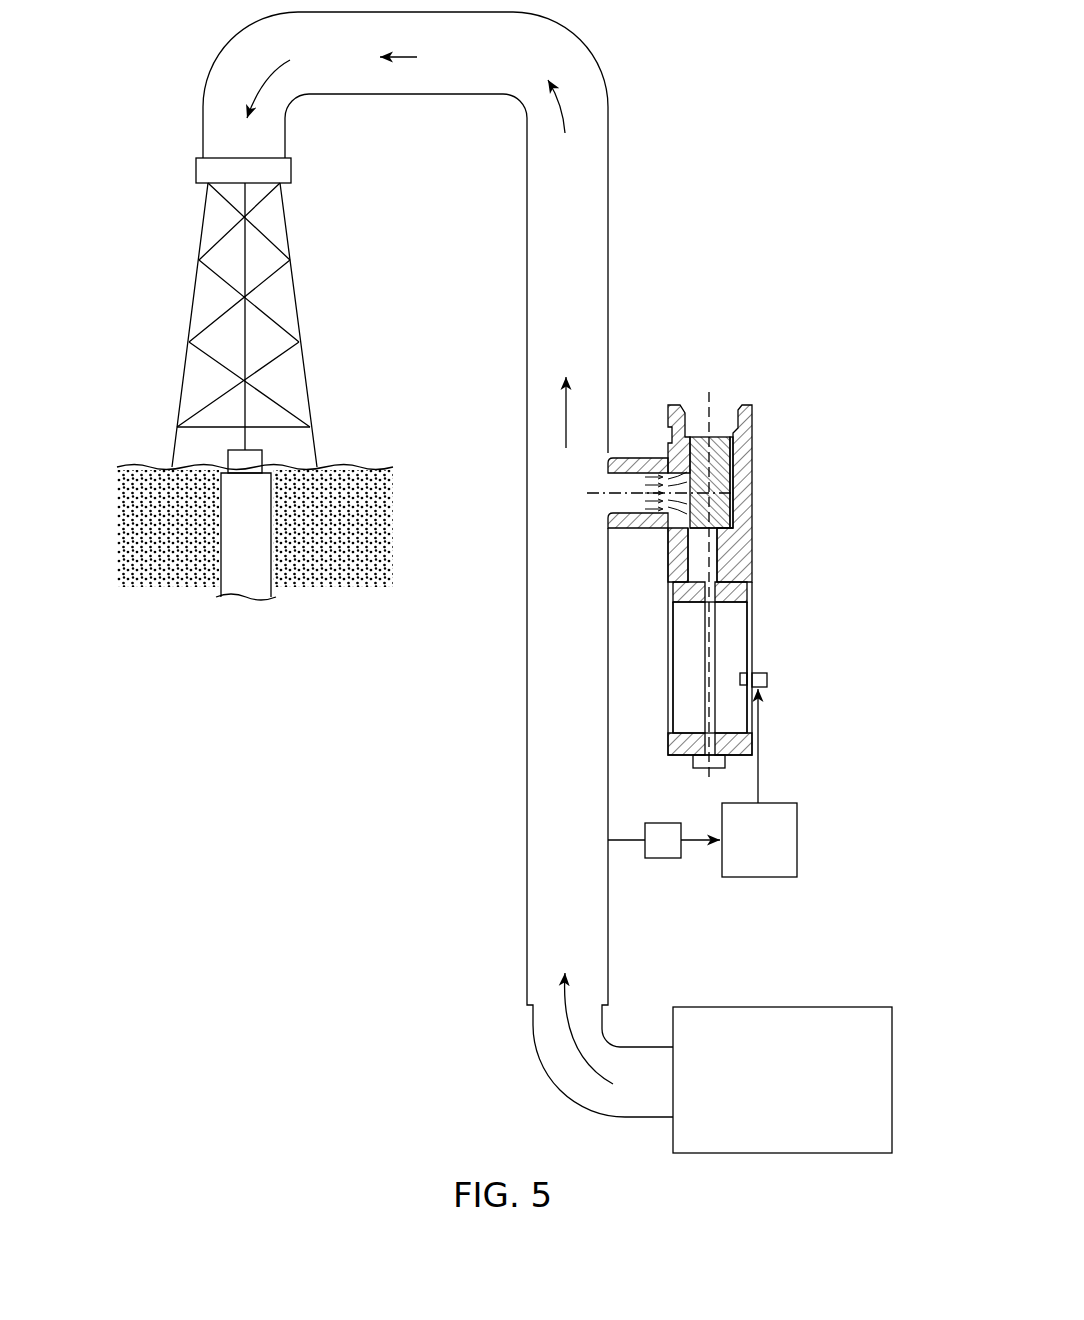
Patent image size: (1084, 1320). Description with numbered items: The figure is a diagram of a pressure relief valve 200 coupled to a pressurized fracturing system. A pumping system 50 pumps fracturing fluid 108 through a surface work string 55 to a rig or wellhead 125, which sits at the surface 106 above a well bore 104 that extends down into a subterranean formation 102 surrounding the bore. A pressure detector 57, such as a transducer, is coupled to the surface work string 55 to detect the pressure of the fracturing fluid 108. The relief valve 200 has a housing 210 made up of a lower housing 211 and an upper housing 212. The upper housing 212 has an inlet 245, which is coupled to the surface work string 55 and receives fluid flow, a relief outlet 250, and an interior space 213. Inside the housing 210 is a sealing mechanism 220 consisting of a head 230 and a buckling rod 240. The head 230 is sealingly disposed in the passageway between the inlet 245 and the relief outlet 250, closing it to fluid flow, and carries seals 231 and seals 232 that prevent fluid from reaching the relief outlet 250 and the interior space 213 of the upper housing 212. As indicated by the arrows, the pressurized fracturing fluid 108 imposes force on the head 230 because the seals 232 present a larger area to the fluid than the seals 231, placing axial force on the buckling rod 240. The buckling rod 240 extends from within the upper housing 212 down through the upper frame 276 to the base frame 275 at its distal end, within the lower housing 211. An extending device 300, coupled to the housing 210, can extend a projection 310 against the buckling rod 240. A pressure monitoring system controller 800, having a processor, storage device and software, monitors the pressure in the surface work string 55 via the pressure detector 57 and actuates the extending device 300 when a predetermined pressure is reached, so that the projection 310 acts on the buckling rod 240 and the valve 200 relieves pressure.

The pumping system 50 is at (782, 1007).
The surface work string 55 is at (527, 356).
The pressure detector 57 is at (657, 858).
The subterranean formation 102 is at (368, 527).
The well bore 104 is at (271, 548).
The surface 106 is at (370, 466).
The fracturing fluid 108 is at (562, 998).
The rig or wellhead 125 is at (190, 278).
The pressure relief valve 200 is at (777, 380).
The housing 210 is at (758, 570).
The lower housing 211 is at (669, 655).
The upper housing 212 is at (752, 478).
The interior space 213 is at (720, 555).
The sealing mechanism 220 is at (690, 622).
The head 230 is at (727, 458).
The seals 231 is at (723, 452).
The seals 232 is at (737, 523).
The buckling rod 240 is at (715, 615).
The inlet 245 is at (608, 483).
The relief outlet 250 is at (698, 412).
The base frame 275 is at (683, 750).
The upper frame 276 is at (673, 592).
The extending device 300 is at (767, 682).
The projection 310 is at (745, 675).
The pressure monitoring system controller 800 is at (797, 840).